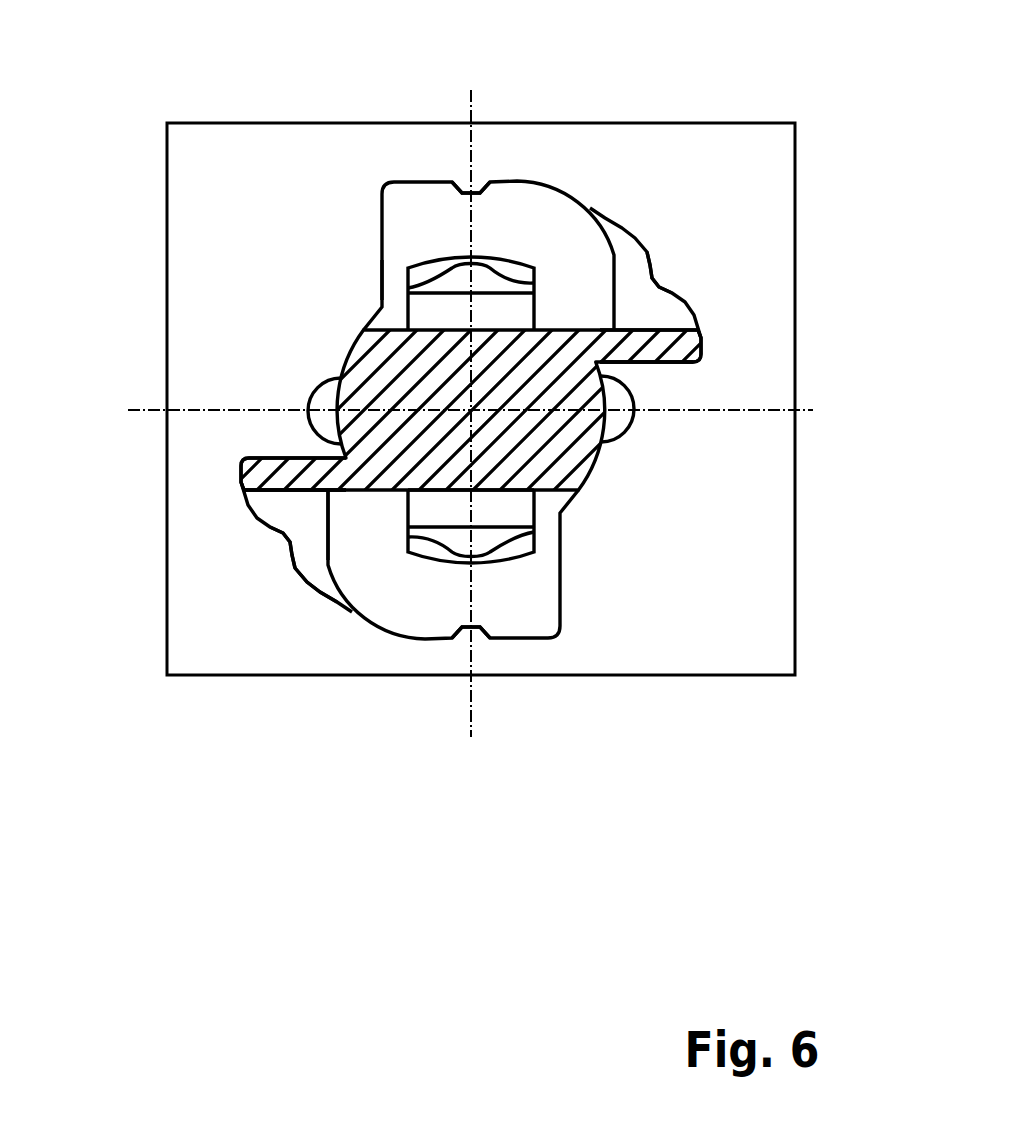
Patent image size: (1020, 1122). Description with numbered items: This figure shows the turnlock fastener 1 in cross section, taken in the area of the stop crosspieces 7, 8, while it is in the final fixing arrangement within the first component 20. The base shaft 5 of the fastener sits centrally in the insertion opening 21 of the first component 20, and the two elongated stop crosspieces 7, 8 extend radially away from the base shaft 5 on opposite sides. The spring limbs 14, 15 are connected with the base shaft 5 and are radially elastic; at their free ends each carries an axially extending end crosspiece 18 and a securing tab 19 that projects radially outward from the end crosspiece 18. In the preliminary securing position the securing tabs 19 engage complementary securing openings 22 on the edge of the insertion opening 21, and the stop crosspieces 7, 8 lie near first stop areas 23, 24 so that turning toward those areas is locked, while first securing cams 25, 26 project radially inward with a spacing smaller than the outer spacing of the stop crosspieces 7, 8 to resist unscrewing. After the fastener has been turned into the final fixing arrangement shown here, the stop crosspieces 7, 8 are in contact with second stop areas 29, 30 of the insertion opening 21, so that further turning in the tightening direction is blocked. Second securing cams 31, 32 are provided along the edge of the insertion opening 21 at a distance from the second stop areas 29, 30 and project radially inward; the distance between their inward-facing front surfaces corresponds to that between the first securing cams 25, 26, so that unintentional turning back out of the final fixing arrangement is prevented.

The turnlock fastener 1 is at (403, 563).
The base shaft 5 is at (383, 437).
The stop crosspiece 7 is at (700, 345).
The stop crosspiece 8 is at (278, 482).
The spring limb 14 is at (513, 315).
The spring limb 15 is at (503, 503).
The end crosspiece 18 is at (513, 280).
The securing tab 19 is at (478, 262).
The first component 20 is at (710, 190).
The insertion opening 21 is at (303, 542).
The securing opening 22 is at (323, 403).
The first stop area 23 is at (376, 248).
The first stop area 24 is at (563, 553).
The first securing cam 25 is at (462, 177).
The first securing cam 26 is at (477, 638).
The second stop area 29 is at (290, 452).
The second stop area 30 is at (655, 364).
The second securing cam 31 is at (278, 537).
The second securing cam 32 is at (663, 277).